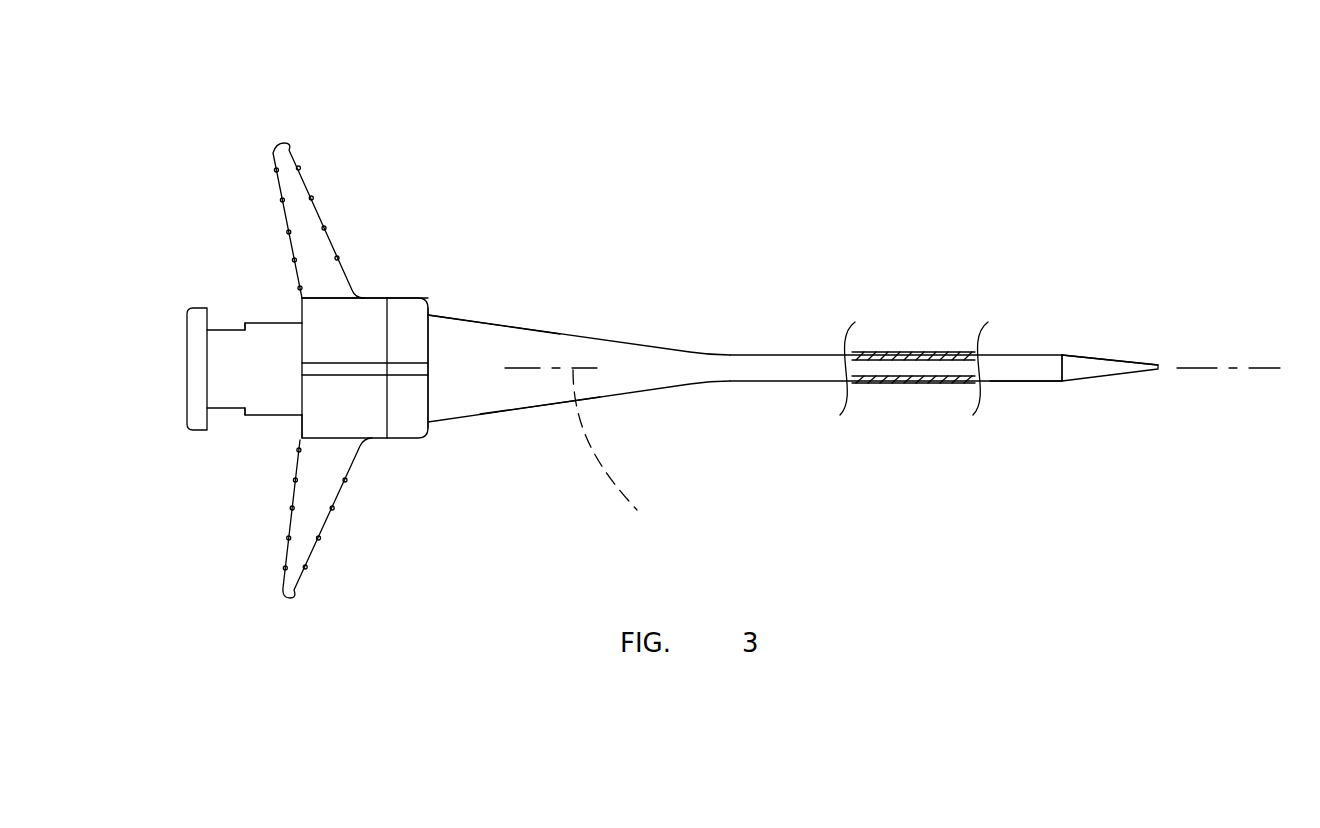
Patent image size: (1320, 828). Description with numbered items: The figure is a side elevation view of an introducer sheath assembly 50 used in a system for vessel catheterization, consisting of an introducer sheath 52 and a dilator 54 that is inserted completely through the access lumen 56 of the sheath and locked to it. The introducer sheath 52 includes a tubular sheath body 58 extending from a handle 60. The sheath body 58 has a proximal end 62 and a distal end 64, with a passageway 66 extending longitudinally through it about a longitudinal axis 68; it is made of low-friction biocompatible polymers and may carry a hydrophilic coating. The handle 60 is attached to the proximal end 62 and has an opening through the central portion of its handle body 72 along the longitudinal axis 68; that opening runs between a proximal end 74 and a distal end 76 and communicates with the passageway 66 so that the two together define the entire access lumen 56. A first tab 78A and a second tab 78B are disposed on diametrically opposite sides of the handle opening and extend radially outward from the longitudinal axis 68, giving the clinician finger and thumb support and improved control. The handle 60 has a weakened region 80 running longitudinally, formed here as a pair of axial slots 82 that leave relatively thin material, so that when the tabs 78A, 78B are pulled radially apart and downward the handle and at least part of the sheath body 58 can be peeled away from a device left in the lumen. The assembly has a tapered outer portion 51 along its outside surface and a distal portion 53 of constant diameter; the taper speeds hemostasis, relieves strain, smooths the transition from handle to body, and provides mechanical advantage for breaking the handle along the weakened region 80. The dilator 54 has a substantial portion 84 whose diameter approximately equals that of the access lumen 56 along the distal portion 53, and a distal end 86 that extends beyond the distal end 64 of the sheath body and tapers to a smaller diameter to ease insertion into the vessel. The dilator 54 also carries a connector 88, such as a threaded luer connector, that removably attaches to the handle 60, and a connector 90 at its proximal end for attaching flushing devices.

The introducer sheath assembly 50 is at (655, 240).
The tapered outer portion 51 is at (495, 340).
The introducer sheath 52 is at (678, 392).
The distal portion 53 is at (1017, 380).
The dilator 54 is at (1088, 367).
The access lumen 56 is at (585, 456).
The sheath body 58 is at (542, 397).
The handle 60 is at (335, 300).
The proximal end 62 is at (430, 312).
The distal end 64 is at (1067, 356).
The passageway 66 is at (888, 380).
The longitudinal axis 68 is at (1262, 367).
The handle body 72 is at (405, 312).
The proximal end 74 is at (302, 417).
The distal end 76 is at (428, 420).
The first tab 78A is at (295, 198).
The second tab 78B is at (303, 543).
The weakened region 80 is at (310, 387).
The axial slots 82 is at (363, 375).
The substantial portion 84 is at (878, 365).
The distal end 86 is at (1120, 358).
The connector 88 is at (233, 307).
The connector 90 is at (185, 343).